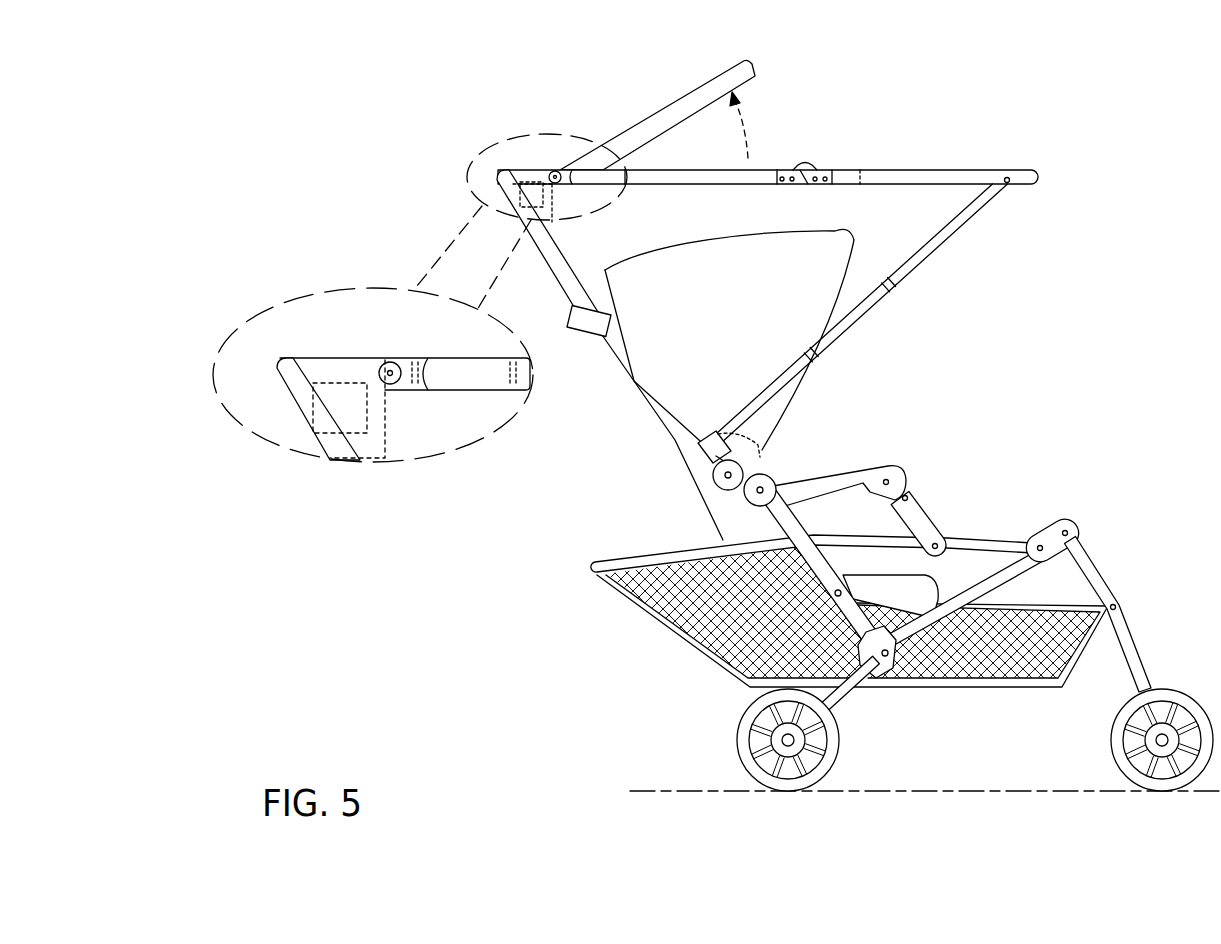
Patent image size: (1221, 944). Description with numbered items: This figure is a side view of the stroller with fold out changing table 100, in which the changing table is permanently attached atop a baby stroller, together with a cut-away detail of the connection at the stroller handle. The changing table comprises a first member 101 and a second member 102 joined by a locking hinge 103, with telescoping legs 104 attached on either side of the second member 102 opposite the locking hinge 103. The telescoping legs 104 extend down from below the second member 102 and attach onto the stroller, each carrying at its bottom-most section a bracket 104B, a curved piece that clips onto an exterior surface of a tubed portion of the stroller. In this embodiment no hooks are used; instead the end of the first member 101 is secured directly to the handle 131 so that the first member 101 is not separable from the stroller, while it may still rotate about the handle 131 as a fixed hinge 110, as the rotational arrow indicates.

The stroller with fold out changing table 100 is at (1049, 123).
The first member 101 is at (681, 177).
The second member 102 is at (915, 176).
The locking hinge 103 is at (803, 165).
The telescoping legs 104 is at (955, 241).
The bracket 104B is at (700, 452).
The fixed hinge 110 is at (390, 372).
The handle 131 is at (333, 366).